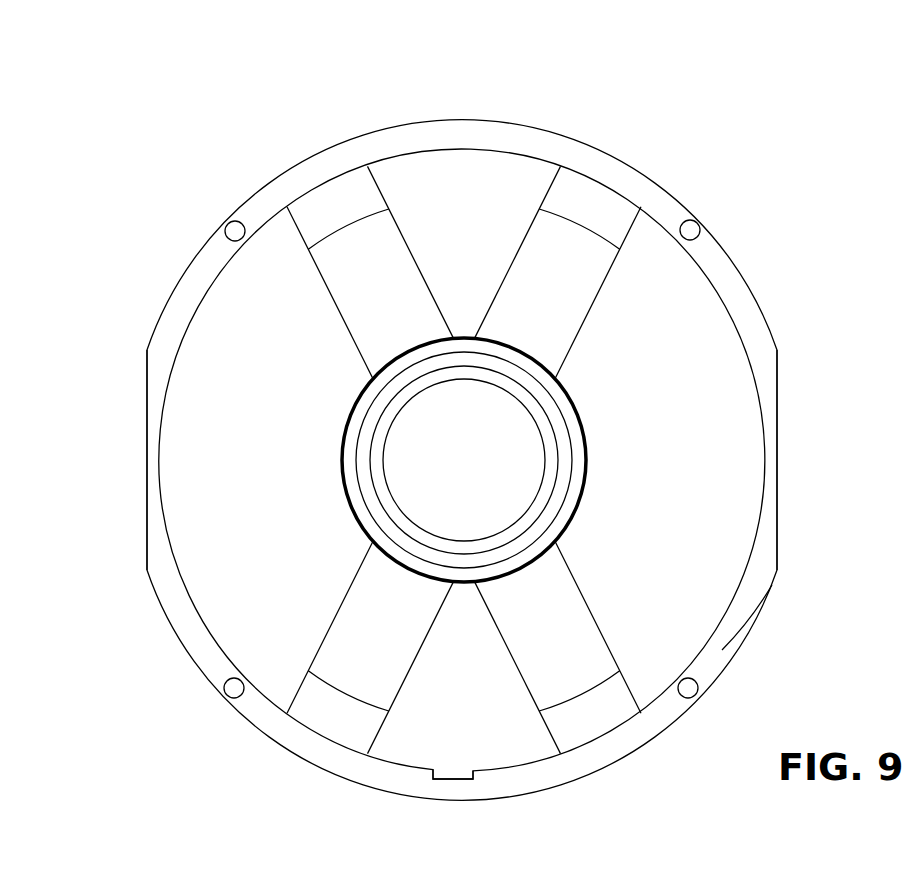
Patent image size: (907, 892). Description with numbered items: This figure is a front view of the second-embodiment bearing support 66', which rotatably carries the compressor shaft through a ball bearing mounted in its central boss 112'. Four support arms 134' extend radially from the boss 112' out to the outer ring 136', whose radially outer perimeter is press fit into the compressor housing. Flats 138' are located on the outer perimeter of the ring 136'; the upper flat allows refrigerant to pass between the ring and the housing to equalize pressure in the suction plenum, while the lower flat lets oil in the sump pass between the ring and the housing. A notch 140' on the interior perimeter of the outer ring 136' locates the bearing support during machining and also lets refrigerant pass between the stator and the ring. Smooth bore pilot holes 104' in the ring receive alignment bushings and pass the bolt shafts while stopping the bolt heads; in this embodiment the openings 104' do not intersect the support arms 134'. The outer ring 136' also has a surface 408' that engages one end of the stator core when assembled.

The bearing support 66' is at (286, 56).
The outer ring 136' is at (462, 443).
The flats 138' is at (462, 460).
The notch 140' is at (454, 749).
The support arms 134' is at (471, 459).
The central boss 112' is at (430, 460).
The pilot holes 104' is at (464, 442).
The surface 408' is at (771, 617).